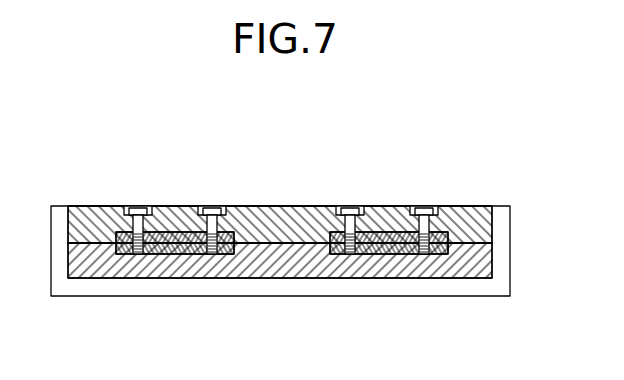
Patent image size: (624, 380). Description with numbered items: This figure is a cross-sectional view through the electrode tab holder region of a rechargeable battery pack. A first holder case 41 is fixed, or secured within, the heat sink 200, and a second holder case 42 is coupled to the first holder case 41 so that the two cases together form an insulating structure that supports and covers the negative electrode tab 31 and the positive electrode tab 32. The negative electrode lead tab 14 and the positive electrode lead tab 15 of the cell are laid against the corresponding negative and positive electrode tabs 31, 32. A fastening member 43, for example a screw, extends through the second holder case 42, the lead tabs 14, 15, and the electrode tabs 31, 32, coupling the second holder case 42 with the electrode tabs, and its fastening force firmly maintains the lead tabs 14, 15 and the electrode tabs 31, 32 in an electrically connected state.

The heat sink 200 is at (80, 296).
The second holder case 42 is at (470, 226).
The first holder case 41 is at (478, 258).
The positive electrode tab 32 is at (183, 254).
The negative electrode tab 31 is at (398, 254).
The positive electrode lead tab 15 is at (165, 231).
The negative electrode lead tab 14 is at (376, 238).
The fastening member 43 is at (210, 206).